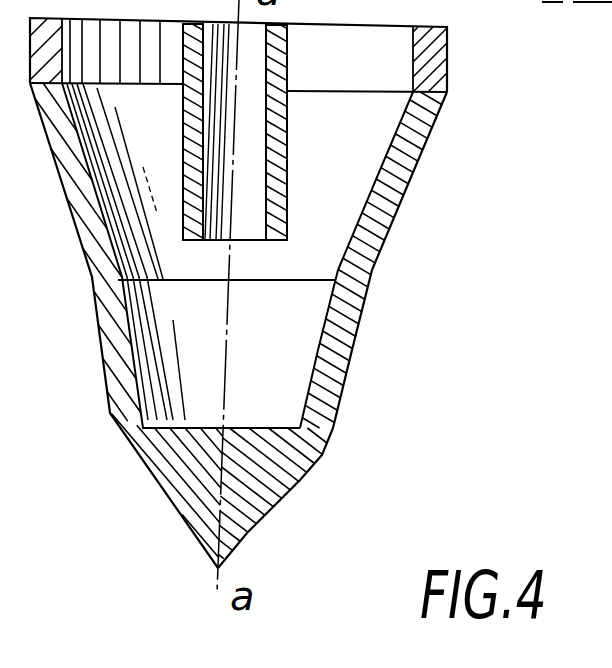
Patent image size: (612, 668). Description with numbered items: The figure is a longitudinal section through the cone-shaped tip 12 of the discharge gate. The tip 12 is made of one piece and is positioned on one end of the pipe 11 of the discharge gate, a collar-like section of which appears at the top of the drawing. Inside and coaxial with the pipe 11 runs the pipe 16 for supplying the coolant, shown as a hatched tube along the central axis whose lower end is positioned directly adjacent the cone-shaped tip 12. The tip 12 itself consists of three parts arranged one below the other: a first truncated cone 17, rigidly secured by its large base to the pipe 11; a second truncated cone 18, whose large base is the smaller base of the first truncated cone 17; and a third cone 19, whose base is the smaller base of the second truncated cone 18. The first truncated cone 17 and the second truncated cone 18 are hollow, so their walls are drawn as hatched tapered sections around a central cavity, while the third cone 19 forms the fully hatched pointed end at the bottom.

The pipe 11 is at (447, 63).
The cone-shaped tip 12 is at (263, 325).
The pipe for supplying the coolant 16 is at (288, 150).
The first truncated cone 17 is at (402, 197).
The second truncated cone 18 is at (349, 363).
The third cone 19 is at (279, 494).